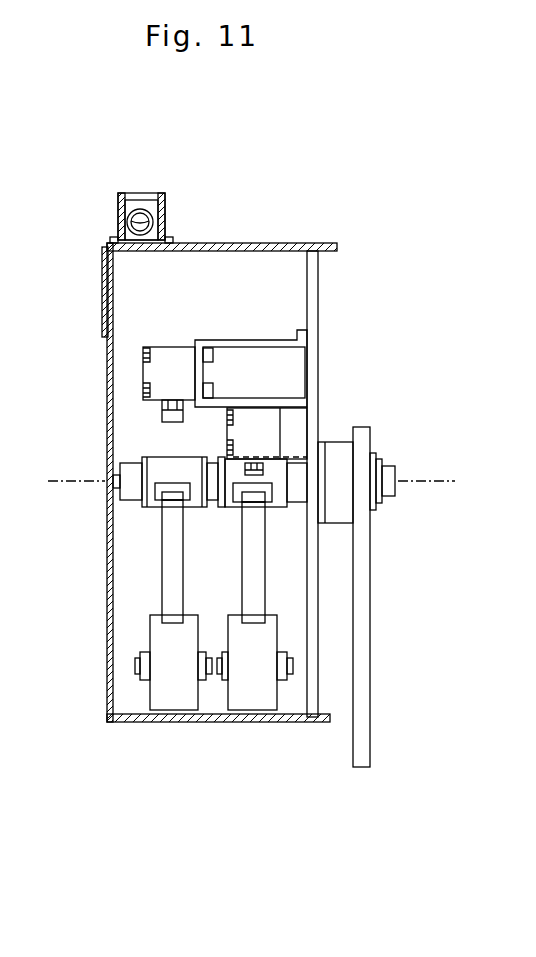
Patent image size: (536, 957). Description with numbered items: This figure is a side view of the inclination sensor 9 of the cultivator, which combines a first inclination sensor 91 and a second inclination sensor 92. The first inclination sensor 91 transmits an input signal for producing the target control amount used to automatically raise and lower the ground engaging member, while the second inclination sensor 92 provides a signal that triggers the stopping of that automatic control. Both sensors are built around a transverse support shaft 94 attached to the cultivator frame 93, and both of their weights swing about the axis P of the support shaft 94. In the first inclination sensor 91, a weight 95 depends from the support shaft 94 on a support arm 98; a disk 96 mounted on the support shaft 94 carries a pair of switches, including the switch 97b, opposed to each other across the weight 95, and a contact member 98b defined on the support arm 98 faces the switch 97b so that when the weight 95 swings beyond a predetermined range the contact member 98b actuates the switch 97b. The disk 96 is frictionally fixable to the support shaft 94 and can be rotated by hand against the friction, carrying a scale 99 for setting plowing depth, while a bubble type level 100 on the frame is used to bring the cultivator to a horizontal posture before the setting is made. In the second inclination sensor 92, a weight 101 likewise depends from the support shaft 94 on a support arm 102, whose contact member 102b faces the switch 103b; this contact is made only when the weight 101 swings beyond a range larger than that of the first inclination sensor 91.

The inclination sensor 9 is at (296, 209).
The first inclination sensor 91 is at (280, 585).
The second inclination sensor 92 is at (143, 562).
The cultivator frame 93 is at (362, 720).
The transverse support shaft 94 is at (108, 483).
The weight 95 is at (255, 693).
The disk 96 is at (318, 300).
The switch 97b is at (263, 437).
The support arm 98 is at (257, 555).
The contact member 98b is at (253, 505).
The scale 99 is at (102, 283).
The bubble type level 100 is at (142, 203).
The weight 101 is at (175, 695).
The support arm 102 is at (160, 590).
The contact member 102b is at (172, 498).
The switch 103b is at (155, 373).
The axis P is at (244, 480).